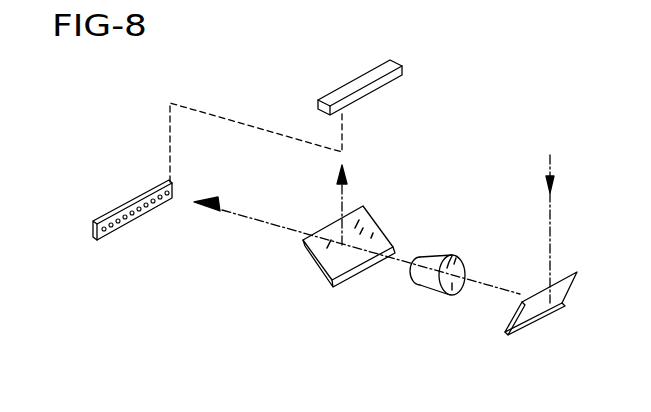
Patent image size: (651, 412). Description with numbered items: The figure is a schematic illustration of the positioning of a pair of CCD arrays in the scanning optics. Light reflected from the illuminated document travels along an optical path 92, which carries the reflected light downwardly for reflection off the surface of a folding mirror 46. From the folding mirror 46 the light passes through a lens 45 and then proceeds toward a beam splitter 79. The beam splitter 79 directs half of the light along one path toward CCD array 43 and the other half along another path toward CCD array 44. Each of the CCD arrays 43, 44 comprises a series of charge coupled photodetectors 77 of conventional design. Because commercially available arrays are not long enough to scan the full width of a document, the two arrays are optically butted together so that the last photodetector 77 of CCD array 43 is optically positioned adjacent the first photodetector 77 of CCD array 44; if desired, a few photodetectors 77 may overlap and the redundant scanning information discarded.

The CCD array 43 is at (358, 82).
The CCD array 44 is at (91, 232).
The lens 45 is at (426, 283).
The folding mirror 46 is at (537, 315).
The charge coupled photodetectors 77 is at (153, 203).
The beam splitter 79 is at (314, 256).
The optical path 92 is at (553, 272).